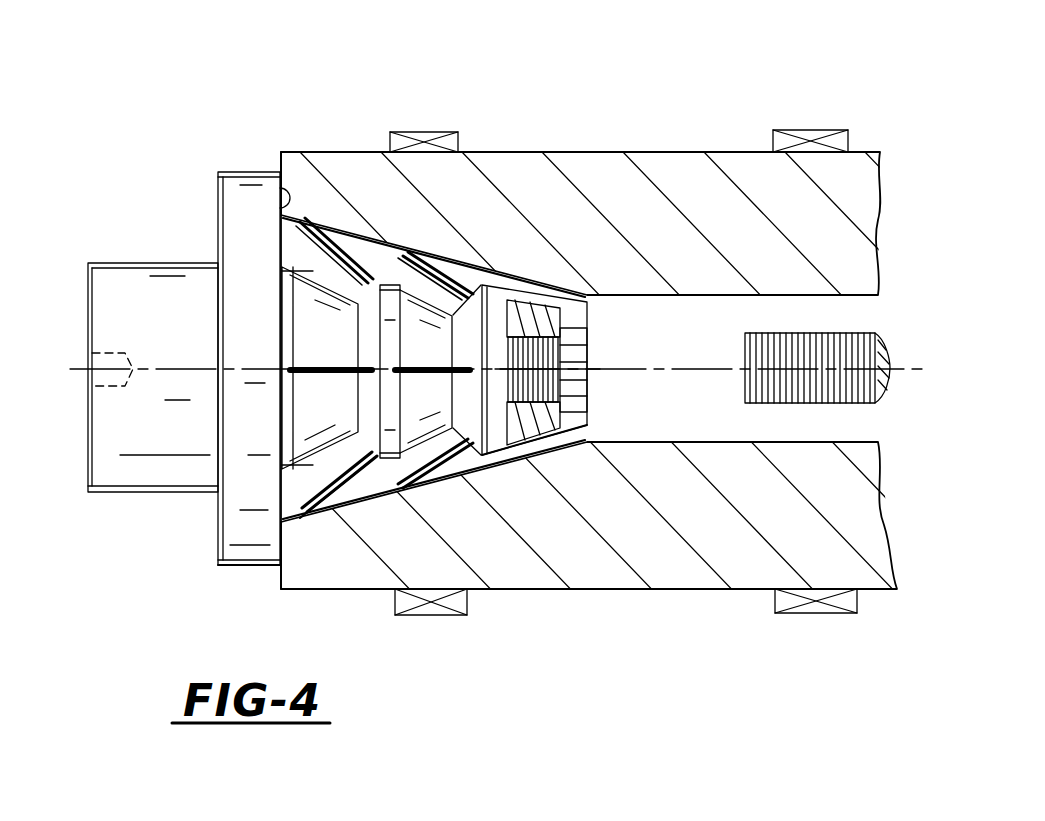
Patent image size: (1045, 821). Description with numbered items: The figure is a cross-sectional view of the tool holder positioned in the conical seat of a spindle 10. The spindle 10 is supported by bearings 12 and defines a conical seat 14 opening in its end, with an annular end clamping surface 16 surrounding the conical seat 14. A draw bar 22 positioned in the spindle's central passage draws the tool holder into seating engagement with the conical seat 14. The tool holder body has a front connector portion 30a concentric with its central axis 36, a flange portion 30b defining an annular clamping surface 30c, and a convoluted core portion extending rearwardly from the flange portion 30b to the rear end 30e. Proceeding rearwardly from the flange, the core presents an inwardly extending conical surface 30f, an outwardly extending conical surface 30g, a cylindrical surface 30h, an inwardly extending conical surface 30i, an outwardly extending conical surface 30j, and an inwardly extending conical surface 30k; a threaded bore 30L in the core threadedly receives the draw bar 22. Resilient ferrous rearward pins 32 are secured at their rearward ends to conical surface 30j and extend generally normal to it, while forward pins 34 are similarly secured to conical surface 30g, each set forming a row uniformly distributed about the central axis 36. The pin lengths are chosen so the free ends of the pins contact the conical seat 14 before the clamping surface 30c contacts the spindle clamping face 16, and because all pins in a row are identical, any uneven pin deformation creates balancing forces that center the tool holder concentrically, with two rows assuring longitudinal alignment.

The spindle 10 is at (642, 137).
The bearings 12 is at (450, 132).
The conical seat 14 is at (490, 262).
The annular end clamping surface 16 is at (263, 160).
The draw bar 22 is at (780, 333).
The front connector portion 30a is at (122, 262).
The flange portion 30b is at (250, 566).
The annular clamping surface 30c is at (280, 196).
The rear end 30e is at (595, 423).
The inwardly extending conical surface 30f is at (310, 263).
The outwardly extending conical surface 30g is at (372, 402).
The cylindrical surface 30h is at (397, 460).
The inwardly extending conical surface 30i is at (477, 443).
The outwardly extending conical surface 30j is at (505, 320).
The inwardly extending conical surface 30k is at (562, 442).
The threaded bore 30L is at (593, 347).
The rearward pins 32 is at (362, 232).
The forward pins 34 is at (305, 216).
The central axis 36 is at (160, 353).